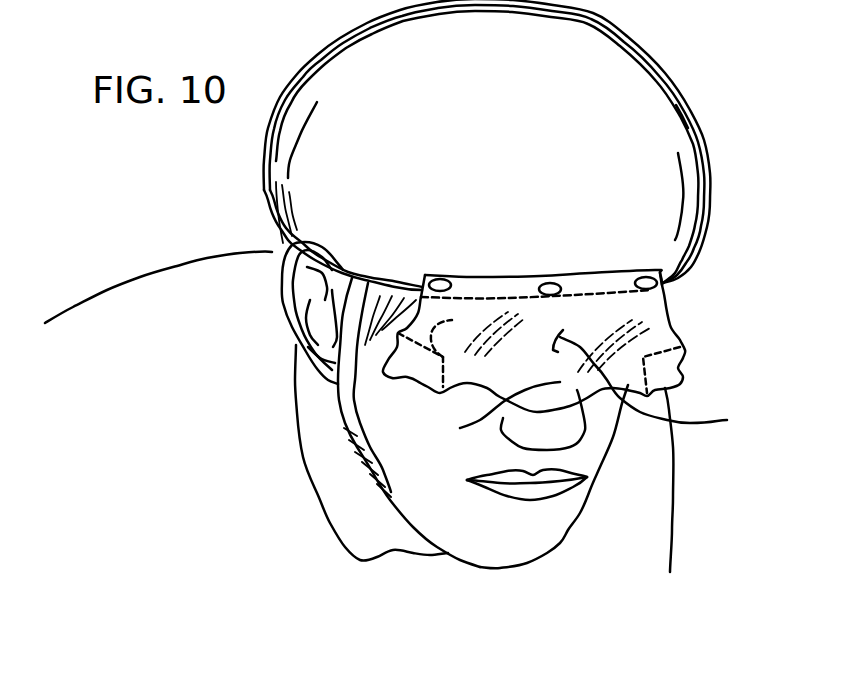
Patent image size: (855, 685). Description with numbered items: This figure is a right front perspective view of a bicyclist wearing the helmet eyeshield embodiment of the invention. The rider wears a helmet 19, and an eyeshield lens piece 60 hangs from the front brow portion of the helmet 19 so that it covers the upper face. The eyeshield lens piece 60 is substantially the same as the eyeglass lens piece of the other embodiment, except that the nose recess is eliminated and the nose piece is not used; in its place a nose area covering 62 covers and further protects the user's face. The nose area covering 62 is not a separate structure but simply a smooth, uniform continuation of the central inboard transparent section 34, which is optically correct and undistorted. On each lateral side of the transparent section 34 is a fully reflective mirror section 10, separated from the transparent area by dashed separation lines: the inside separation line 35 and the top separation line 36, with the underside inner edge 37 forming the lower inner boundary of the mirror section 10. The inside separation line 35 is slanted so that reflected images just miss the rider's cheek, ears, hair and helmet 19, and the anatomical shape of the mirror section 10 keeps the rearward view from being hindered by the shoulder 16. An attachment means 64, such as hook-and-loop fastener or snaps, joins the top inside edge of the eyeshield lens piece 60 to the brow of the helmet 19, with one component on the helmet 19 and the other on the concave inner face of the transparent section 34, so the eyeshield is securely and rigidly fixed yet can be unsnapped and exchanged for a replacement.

The lateral outboard mirror section 10 is at (662, 362).
The shoulder 16 is at (205, 305).
The helmet 19 is at (297, 133).
The central inboard transparent section 34 is at (633, 319).
The inside separation line 35 is at (443, 367).
The top separation line 36 is at (460, 331).
The underside inner edge 37 is at (413, 387).
The eyeshield lens piece 60 is at (656, 382).
The nose area covering 62 is at (494, 414).
The attachment means 64 is at (650, 282).